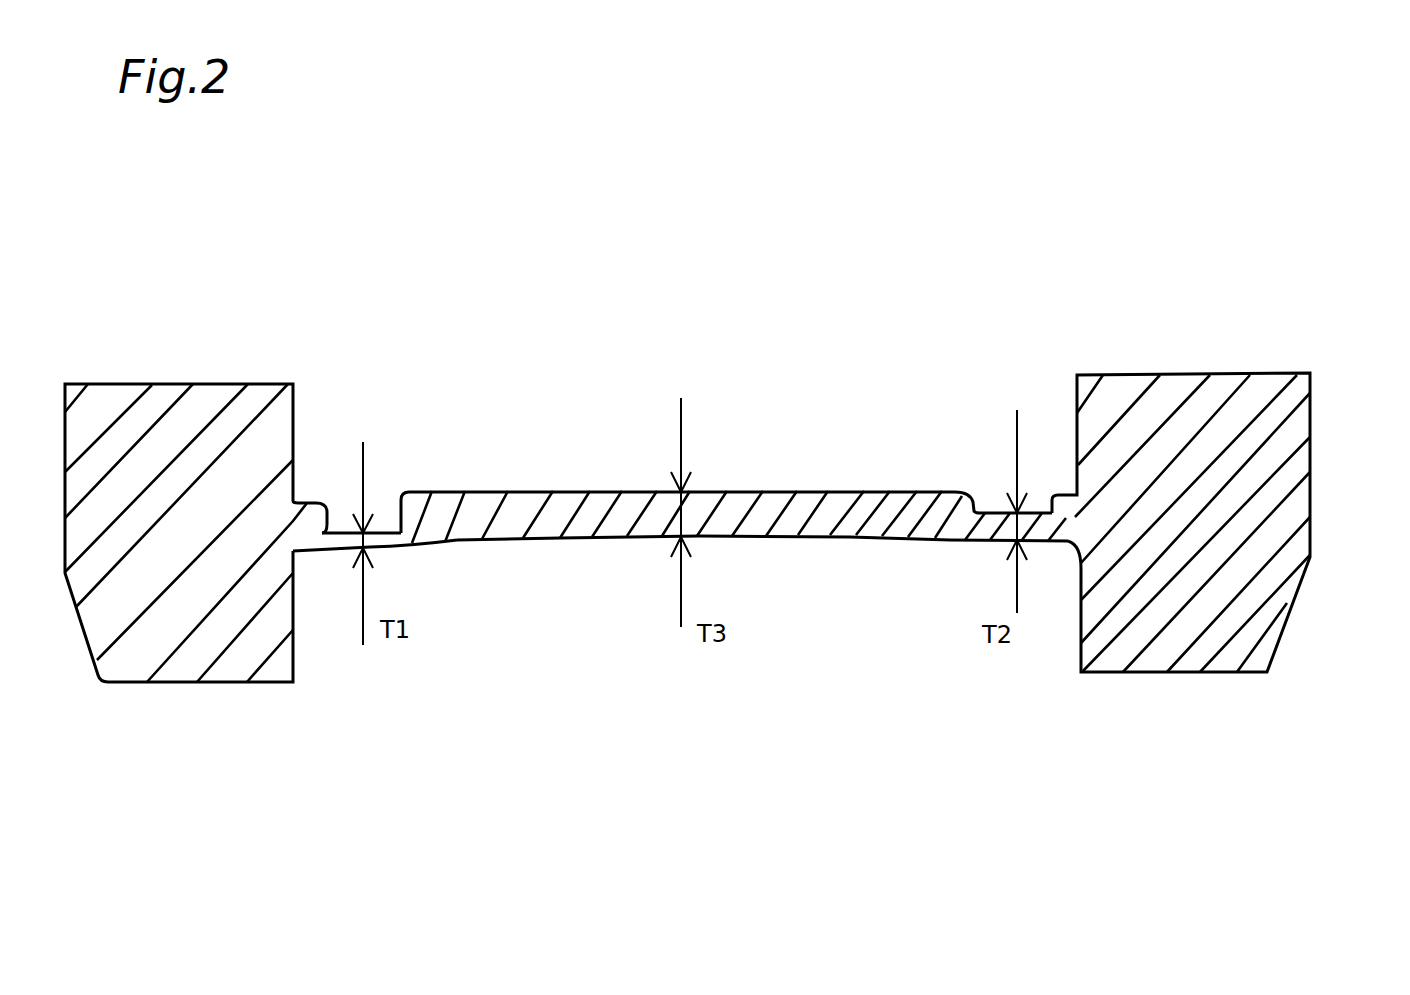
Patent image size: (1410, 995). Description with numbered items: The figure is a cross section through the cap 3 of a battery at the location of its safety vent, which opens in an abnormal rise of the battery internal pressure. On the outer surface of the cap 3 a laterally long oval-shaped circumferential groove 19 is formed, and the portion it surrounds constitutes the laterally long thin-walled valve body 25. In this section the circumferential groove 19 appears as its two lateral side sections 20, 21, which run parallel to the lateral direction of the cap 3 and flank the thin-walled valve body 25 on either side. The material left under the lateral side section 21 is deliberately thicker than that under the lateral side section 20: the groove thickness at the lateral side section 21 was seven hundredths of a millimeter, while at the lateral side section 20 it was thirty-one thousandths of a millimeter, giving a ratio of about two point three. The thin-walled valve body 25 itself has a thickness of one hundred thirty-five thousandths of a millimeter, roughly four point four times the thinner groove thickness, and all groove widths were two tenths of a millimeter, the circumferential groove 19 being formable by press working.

The cap 3 is at (1298, 535).
The circumferential groove 19 is at (680, 475).
The lateral side section 20 is at (378, 527).
The lateral side section 21 is at (997, 512).
The thin-walled valve body 25 is at (705, 508).